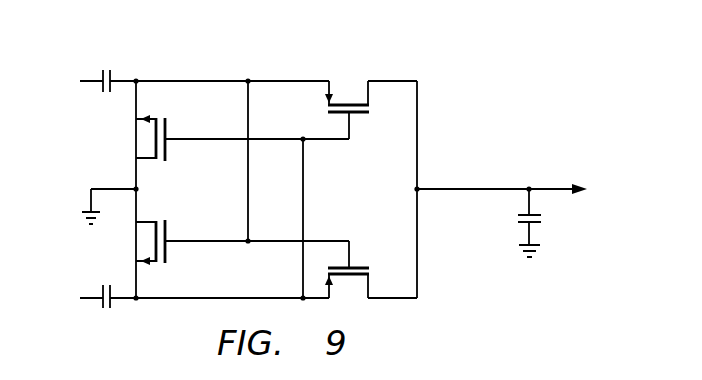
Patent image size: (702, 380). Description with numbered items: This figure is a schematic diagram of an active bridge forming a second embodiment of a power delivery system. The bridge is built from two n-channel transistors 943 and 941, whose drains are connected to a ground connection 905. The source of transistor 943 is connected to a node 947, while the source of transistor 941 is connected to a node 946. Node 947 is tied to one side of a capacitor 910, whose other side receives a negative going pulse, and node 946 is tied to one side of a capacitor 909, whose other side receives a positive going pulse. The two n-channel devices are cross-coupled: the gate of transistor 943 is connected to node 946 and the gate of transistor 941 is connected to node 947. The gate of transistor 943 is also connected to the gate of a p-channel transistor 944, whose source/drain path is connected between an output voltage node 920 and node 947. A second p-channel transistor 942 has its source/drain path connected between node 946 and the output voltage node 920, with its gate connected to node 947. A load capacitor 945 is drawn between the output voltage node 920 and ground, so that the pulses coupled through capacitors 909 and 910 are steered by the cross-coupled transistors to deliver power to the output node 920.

The ground connection 905 is at (113, 187).
The capacitor 909 is at (103, 68).
The capacitor 910 is at (103, 310).
The output voltage node 920 is at (550, 187).
The n-channel transistor 941 is at (168, 145).
The p-channel transistor 942 is at (360, 114).
The n-channel transistor 943 is at (168, 232).
The p-channel transistor 944 is at (360, 265).
The load capacitor CL 945 is at (516, 218).
The node 946 is at (137, 78).
The node 947 is at (138, 301).